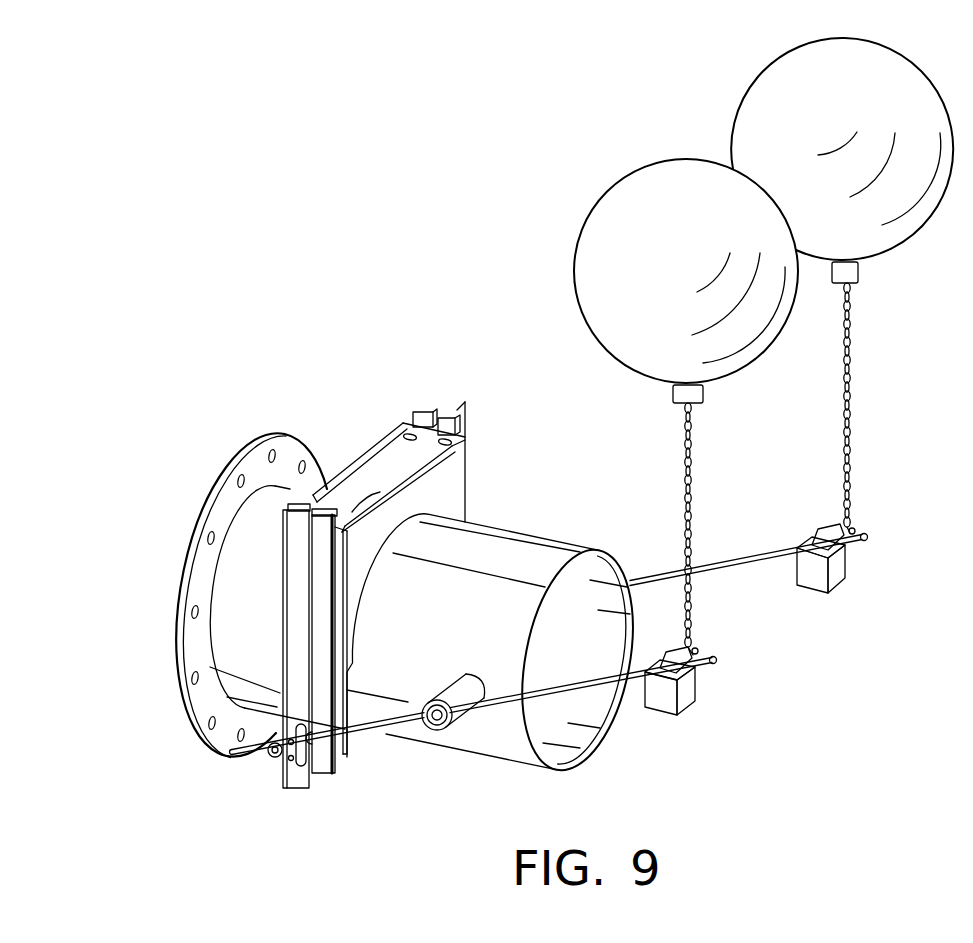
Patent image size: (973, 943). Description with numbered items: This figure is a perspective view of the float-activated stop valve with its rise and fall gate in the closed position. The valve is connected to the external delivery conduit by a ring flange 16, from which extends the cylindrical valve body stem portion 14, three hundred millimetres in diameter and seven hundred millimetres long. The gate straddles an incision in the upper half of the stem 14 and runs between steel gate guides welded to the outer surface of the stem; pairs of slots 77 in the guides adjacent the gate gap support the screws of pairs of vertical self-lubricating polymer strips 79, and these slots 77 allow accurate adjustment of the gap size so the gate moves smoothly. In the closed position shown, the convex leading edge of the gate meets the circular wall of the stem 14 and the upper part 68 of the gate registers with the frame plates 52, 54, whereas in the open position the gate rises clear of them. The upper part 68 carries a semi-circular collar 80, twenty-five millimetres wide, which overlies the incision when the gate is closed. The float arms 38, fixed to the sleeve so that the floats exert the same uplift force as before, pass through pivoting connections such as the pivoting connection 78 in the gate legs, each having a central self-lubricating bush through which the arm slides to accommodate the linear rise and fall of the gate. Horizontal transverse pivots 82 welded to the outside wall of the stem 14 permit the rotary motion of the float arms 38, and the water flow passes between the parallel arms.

The valve body stem portion 14 is at (550, 553).
The ring flange 16 is at (208, 512).
The float arms 38 is at (623, 677).
The frame plate 52 is at (450, 473).
The frame plate 54 is at (384, 424).
The upper part 68 is at (392, 467).
The slots 77 is at (448, 447).
The pivoting connection 78 is at (303, 762).
The vertical self-lubricating polymer strips 79 is at (323, 541).
The semi-circular collar 80 is at (377, 496).
The horizontal transverse pivots 82 is at (447, 729).